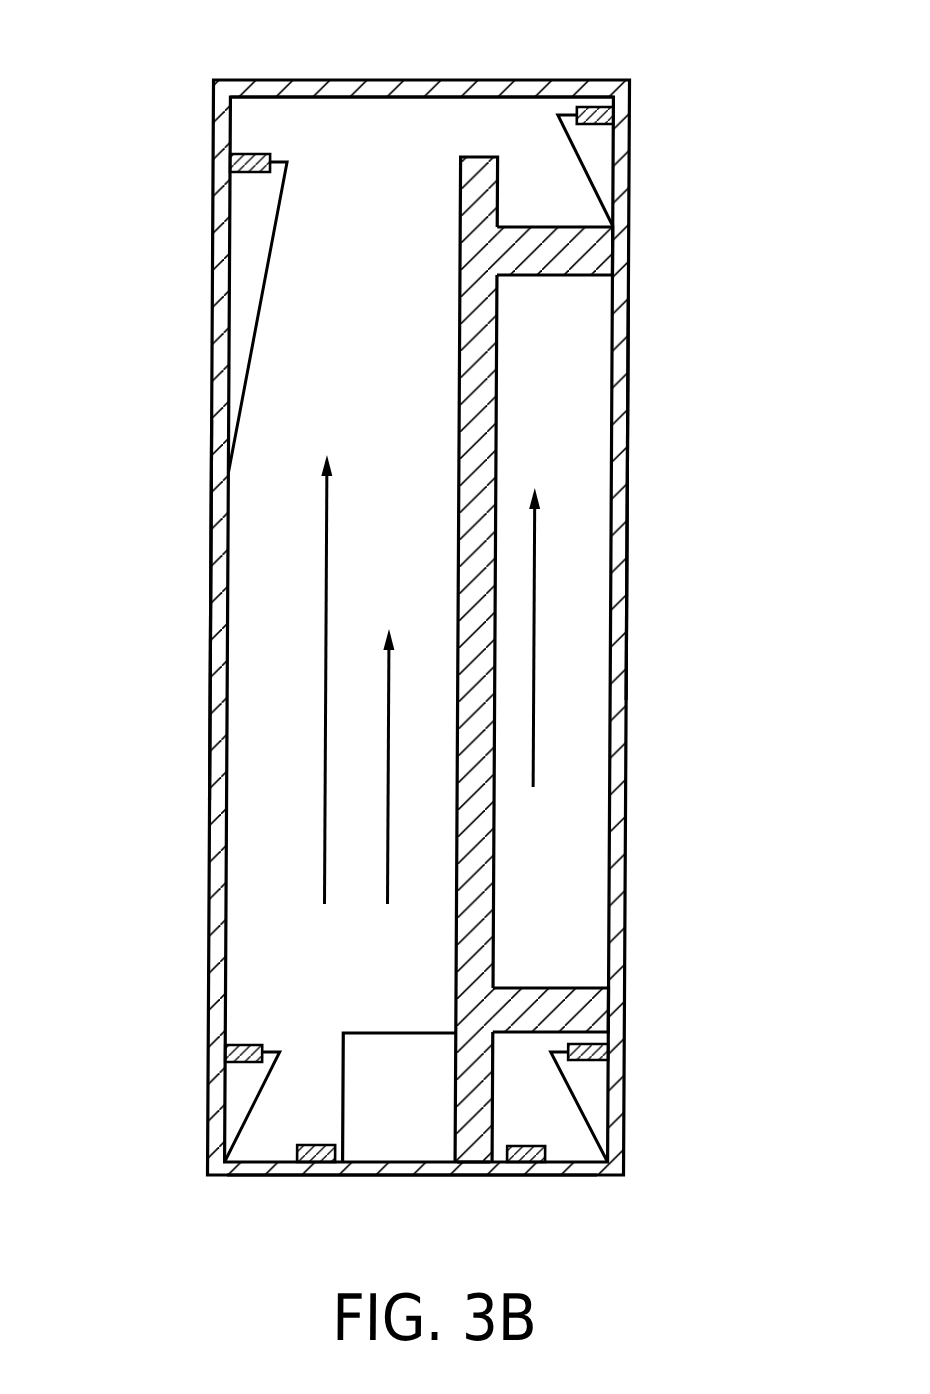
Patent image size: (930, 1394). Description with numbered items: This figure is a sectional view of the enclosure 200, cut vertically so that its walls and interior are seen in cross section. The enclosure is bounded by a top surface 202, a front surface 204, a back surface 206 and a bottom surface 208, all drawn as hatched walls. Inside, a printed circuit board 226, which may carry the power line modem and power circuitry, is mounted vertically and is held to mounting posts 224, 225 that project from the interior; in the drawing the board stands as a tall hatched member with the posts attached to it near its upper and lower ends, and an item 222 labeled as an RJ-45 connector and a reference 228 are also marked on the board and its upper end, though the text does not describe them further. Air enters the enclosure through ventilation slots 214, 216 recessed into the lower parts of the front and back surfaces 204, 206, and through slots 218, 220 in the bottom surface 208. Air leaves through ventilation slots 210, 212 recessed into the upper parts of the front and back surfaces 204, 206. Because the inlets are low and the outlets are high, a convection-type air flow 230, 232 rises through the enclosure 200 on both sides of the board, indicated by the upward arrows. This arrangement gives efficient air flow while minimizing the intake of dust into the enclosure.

The enclosure 200 is at (422, 52).
The top surface 202 is at (280, 80).
The front surface 204 is at (210, 572).
The back surface 206 is at (628, 350).
The bottom surface 208 is at (258, 1175).
The ventilation slot 210 is at (250, 207).
The ventilation slot 212 is at (612, 121).
The ventilation slot 214 is at (236, 1086).
The ventilation slot 216 is at (600, 1083).
The slot 218 is at (313, 1145).
The slot 220 is at (528, 1145).
The RJ-45 connector 222 is at (368, 1033).
The mounting post 224 is at (550, 988).
The mounting post 225 is at (563, 227).
The printed circuit board 226 is at (476, 1158).
The central divider wall 228 is at (497, 156).
The air flow 230 is at (536, 633).
The air flow 232 is at (327, 650).